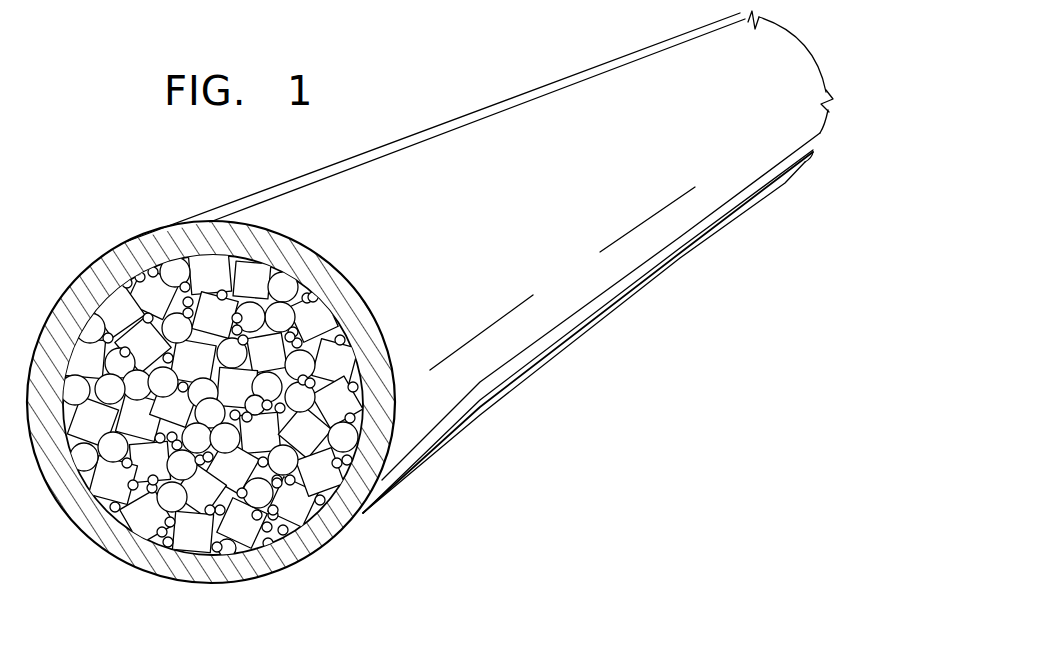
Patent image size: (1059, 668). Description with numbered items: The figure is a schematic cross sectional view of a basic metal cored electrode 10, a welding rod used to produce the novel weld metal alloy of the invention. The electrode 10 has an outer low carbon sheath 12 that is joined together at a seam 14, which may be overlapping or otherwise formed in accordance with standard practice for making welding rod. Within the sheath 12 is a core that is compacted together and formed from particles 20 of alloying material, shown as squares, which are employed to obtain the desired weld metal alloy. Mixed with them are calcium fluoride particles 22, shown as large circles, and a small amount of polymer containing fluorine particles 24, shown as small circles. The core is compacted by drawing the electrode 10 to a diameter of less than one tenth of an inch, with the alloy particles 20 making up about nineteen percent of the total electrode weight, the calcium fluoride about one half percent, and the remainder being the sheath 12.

The basic metal cored electrode 10 is at (428, 148).
The outer low carbon sheath 12 is at (330, 524).
The seam 14 is at (247, 220).
The particles of alloying material 20 is at (347, 362).
The calcium fluoride particles 22 is at (283, 316).
The polymer containing fluorine particles 24 is at (138, 268).